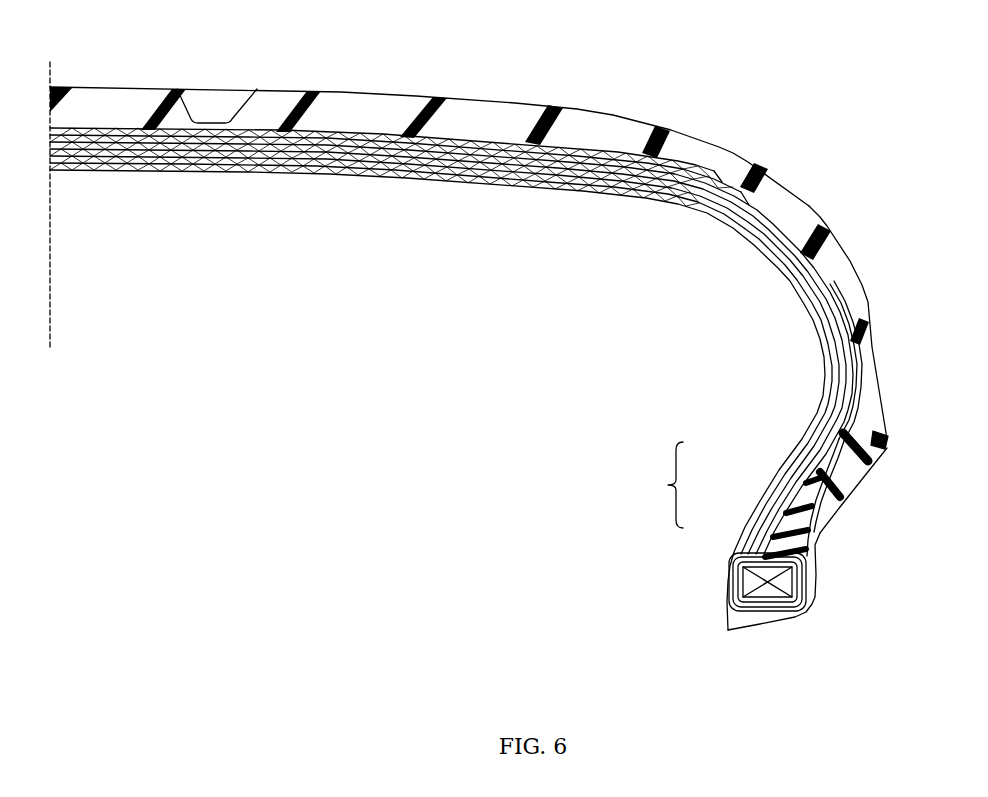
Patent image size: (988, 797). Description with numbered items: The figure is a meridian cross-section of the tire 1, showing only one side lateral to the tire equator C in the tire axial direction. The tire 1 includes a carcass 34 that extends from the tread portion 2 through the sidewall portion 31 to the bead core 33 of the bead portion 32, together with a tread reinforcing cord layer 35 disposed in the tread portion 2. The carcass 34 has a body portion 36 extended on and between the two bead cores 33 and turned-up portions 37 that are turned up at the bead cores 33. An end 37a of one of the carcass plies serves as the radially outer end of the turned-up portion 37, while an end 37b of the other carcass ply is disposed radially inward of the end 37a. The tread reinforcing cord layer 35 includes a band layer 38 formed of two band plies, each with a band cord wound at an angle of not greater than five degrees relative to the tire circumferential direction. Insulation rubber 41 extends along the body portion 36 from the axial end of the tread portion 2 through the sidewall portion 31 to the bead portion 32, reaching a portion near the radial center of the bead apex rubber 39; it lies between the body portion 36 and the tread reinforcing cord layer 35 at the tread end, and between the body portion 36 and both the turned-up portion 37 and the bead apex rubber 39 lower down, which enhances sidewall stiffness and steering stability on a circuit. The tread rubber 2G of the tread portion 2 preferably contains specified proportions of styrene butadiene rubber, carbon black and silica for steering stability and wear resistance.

The tire 1 is at (506, 323).
The tread portion 2 is at (459, 182).
The tread rubber 2G is at (487, 125).
The sidewall portion 31 is at (873, 350).
The bead portion 32 is at (827, 537).
The bead core 33 is at (760, 580).
The carcass 34 is at (451, 348).
The tread reinforcing cord layer 35 is at (196, 146).
The body portion 36 is at (807, 447).
The turned-up portion 37 is at (797, 525).
The end of one carcass ply 37a is at (838, 310).
The end of the other carcass ply 37b is at (806, 500).
The band layer 38 is at (338, 148).
The bead apex rubber 39 is at (775, 545).
The insulation rubber 41 is at (787, 237).
The tire equator C is at (50, 196).